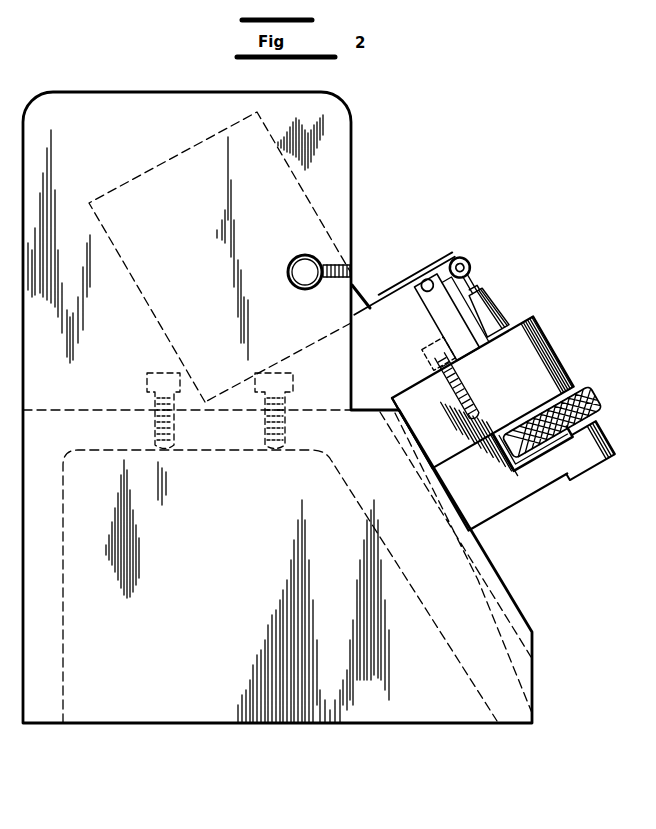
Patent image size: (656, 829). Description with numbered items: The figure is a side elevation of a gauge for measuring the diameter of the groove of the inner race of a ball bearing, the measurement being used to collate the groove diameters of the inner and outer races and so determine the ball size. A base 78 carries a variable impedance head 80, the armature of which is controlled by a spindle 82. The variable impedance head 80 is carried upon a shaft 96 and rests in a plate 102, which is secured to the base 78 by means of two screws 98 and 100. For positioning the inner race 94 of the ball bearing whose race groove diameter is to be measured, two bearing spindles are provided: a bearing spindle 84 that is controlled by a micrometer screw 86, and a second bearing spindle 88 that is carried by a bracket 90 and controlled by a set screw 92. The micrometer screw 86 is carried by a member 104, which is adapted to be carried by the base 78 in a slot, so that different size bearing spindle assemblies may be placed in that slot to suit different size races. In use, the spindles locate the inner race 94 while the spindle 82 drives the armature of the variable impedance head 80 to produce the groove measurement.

The base 78 is at (522, 585).
The variable impedance head 80 is at (366, 282).
The spindle 82 is at (401, 278).
The bearing spindle 84 is at (475, 294).
The micrometer screw 86 is at (600, 400).
The bearing spindle 88 is at (416, 291).
The bracket 90 is at (430, 330).
The set screw 92 is at (435, 290).
The inner race 94 is at (470, 270).
The shaft 96 is at (299, 289).
The screw 98 is at (296, 380).
The screw 100 is at (146, 382).
The plate 102 is at (245, 400).
The member 104 is at (566, 360).